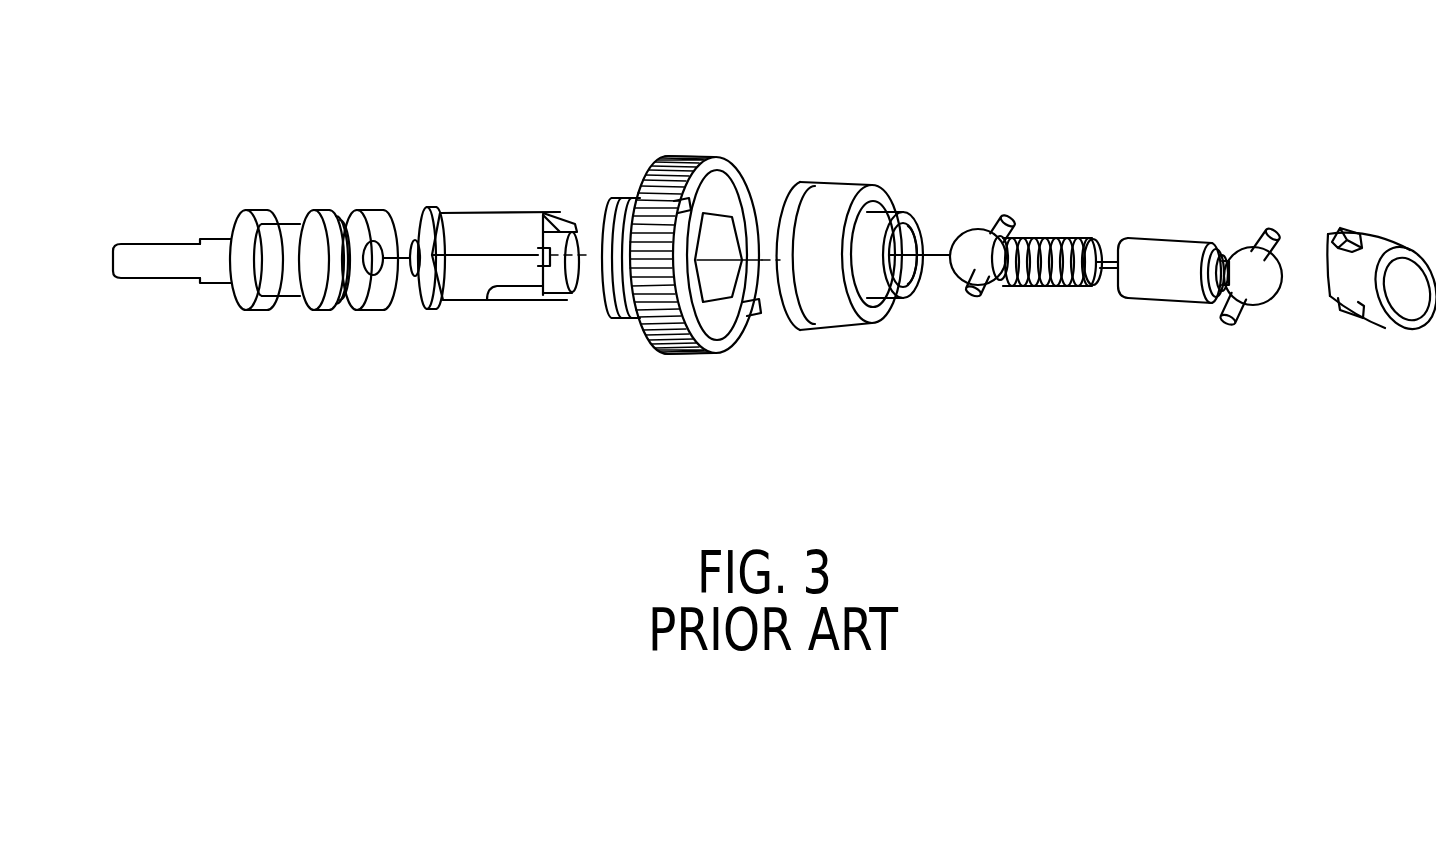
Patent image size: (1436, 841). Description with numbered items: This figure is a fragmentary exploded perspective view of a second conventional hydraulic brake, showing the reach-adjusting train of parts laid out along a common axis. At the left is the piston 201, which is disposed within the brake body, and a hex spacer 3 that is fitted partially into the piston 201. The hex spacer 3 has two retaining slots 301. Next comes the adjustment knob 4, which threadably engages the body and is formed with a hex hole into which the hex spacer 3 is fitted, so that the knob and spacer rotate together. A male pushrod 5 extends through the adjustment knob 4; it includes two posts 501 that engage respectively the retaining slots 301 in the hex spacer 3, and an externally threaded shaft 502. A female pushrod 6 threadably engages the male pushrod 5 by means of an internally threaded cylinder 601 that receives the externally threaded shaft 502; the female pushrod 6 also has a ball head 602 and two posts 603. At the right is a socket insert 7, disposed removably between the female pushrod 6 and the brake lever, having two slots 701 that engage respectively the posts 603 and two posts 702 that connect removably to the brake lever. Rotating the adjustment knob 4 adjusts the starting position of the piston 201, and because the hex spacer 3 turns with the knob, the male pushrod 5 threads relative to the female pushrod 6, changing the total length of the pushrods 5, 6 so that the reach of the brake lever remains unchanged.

The piston 201 is at (293, 288).
The hex spacer 3 is at (507, 252).
The retaining slot 301 is at (493, 212).
The adjustment knob 4 is at (689, 157).
The male pushrod 5 is at (1026, 262).
The post 501 is at (1003, 224).
The externally threaded shaft 502 is at (1047, 287).
The female pushrod 6 is at (1205, 279).
The internally threaded cylinder 601 is at (1160, 292).
The ball head 602 is at (1270, 292).
The post 603 is at (1265, 236).
The socket insert 7 is at (1372, 271).
The slot 701 is at (1350, 308).
The post 702 is at (1340, 232).